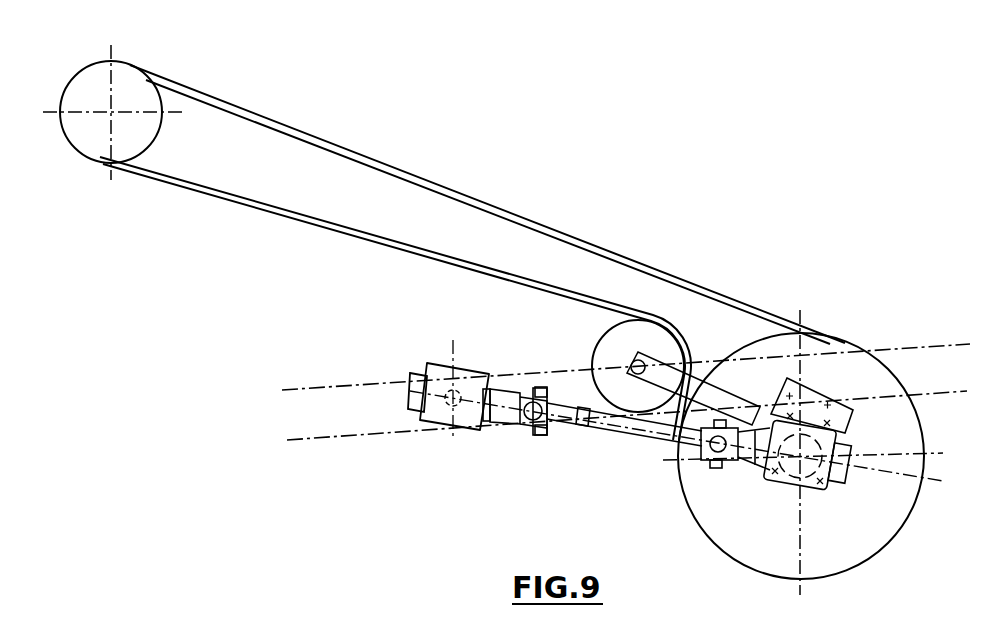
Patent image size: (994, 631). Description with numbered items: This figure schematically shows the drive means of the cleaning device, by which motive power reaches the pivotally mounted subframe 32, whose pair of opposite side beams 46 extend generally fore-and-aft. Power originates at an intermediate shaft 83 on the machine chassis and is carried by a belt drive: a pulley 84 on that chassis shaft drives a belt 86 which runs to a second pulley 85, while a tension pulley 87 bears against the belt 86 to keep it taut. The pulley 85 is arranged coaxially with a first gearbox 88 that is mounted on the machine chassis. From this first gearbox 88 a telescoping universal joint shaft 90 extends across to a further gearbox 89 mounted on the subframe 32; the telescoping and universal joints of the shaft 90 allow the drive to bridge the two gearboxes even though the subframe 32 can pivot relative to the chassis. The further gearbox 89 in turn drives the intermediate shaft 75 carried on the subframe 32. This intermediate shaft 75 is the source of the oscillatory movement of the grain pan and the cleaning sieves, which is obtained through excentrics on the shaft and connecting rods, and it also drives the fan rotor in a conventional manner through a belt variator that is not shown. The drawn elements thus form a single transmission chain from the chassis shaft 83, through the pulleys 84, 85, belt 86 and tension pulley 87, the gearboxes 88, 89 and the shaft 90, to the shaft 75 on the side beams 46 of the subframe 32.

The subframe 32 is at (299, 386).
The side beams 46 is at (328, 387).
The intermediate shaft 75 is at (446, 403).
The intermediate shaft 83 is at (110, 113).
The pulley 84 is at (158, 139).
The pulley 85 is at (923, 443).
The belt 86 is at (590, 244).
The tension pulley 87 is at (598, 343).
The first gearbox 88 is at (810, 490).
The further gearbox 89 is at (472, 432).
The telescoping universal joint shaft 90 is at (632, 437).